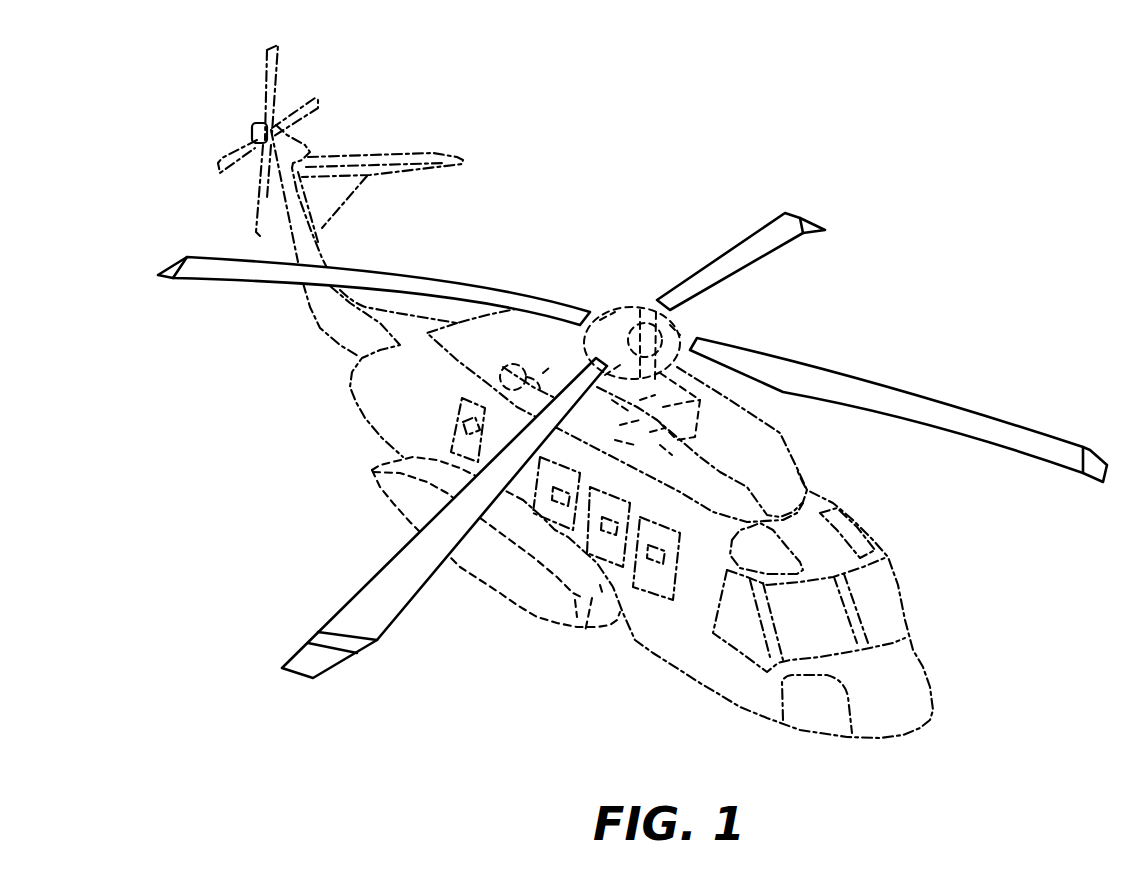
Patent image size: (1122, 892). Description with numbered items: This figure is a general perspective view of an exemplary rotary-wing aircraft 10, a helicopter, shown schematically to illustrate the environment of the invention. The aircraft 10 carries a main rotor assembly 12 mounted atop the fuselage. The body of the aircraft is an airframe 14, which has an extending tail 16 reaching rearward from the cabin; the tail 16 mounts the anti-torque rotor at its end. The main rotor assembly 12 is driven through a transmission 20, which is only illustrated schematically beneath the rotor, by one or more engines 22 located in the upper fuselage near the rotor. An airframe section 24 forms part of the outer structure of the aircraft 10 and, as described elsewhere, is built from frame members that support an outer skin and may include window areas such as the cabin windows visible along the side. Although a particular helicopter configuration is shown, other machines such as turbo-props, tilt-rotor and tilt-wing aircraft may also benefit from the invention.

The rotary-wing aircraft 10 is at (845, 309).
The main rotor assembly 12 is at (635, 310).
The airframe 14 is at (588, 627).
The extending tail 16 is at (318, 323).
The transmission 20 is at (707, 430).
The engines 22 is at (547, 380).
The airframe section 24 is at (665, 603).